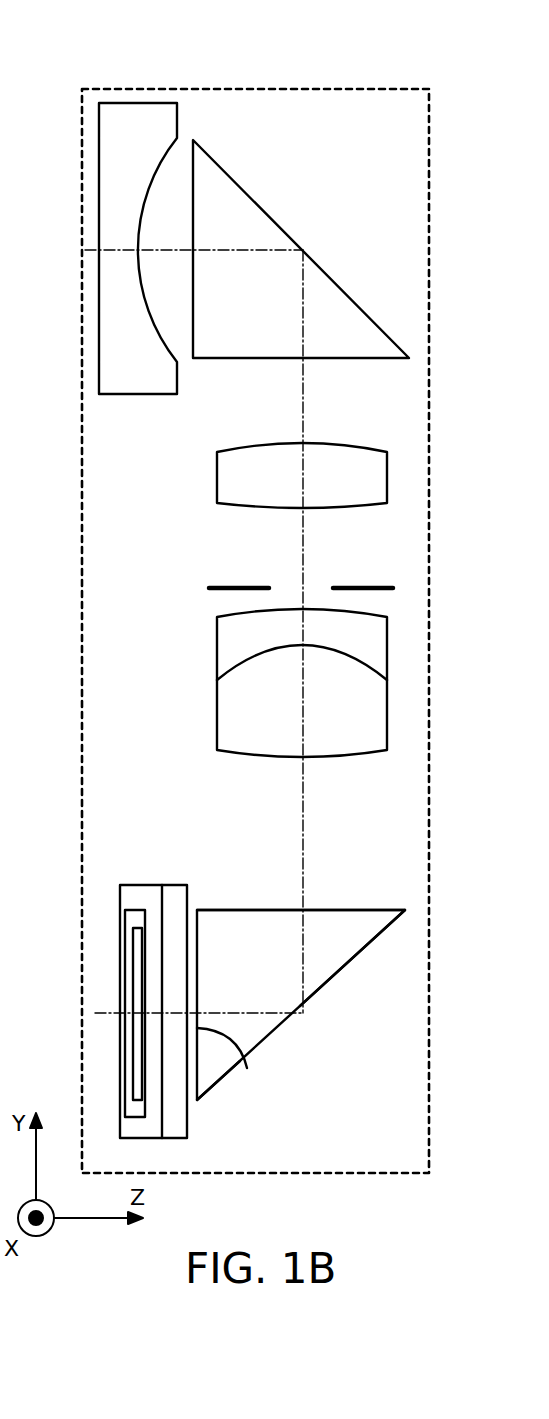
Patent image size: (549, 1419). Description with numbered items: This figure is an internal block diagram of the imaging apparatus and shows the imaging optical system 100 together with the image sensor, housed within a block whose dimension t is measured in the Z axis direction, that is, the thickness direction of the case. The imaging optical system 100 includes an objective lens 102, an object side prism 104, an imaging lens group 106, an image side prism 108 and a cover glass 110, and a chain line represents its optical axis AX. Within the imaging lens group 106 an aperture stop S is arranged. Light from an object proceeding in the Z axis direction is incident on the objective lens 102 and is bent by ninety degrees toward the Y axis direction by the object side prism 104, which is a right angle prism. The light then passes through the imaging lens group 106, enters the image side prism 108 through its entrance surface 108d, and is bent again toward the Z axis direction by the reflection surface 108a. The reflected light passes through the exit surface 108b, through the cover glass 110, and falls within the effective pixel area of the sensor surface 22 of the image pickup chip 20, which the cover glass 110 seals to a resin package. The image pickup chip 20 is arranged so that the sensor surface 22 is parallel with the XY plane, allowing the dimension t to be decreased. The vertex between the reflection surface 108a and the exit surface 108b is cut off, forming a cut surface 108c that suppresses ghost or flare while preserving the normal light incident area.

The imaging optical system 100 is at (143, 672).
The objective lens 102 is at (110, 178).
The object side prism 104 is at (262, 224).
The imaging lens group 106 is at (263, 598).
The aperture stop S is at (368, 588).
The optical axis AX is at (303, 817).
The image side prism 108 is at (301, 998).
The reflection surface 108a is at (367, 943).
The exit surface 108b is at (247, 1068).
The cut surface 108c is at (217, 1100).
The entrance surface 108d is at (247, 910).
The cover glass 110 is at (173, 1138).
The image pickup chip 20 is at (130, 1118).
The sensor surface 22 is at (145, 990).
The dimension of block t is at (429, 87).